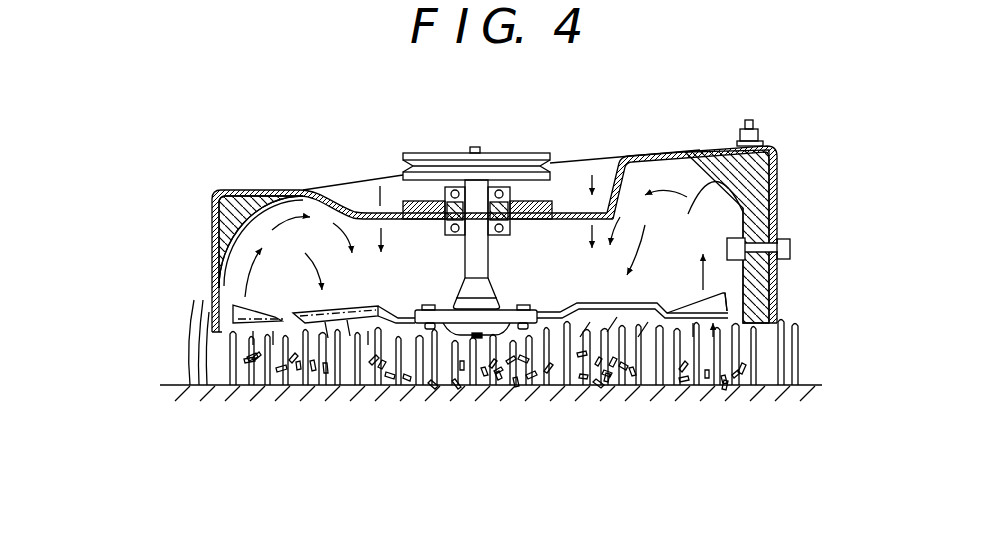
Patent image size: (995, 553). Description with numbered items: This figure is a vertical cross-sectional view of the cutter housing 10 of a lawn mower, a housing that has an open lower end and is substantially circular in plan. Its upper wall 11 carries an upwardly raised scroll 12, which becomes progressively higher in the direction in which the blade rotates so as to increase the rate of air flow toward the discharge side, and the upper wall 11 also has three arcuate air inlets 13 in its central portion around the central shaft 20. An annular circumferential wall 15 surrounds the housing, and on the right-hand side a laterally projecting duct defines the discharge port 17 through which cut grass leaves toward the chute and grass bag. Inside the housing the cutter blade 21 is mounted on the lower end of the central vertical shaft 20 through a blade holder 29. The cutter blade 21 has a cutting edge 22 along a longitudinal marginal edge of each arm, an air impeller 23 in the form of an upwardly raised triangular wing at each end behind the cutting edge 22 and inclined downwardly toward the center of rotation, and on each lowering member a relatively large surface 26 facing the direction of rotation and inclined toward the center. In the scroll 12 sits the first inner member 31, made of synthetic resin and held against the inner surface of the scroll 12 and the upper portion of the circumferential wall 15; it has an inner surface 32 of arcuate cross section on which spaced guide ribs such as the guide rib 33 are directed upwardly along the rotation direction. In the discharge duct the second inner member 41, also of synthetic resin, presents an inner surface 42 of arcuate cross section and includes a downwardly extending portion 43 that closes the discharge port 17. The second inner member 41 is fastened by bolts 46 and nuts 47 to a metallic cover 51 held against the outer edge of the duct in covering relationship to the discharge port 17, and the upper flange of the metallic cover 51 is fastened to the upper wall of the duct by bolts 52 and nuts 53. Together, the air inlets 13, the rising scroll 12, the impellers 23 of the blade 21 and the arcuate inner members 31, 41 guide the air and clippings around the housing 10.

The cutter housing 10 is at (205, 258).
The upper wall 11 is at (566, 212).
The scroll 12 is at (326, 188).
The air inlets 13 is at (390, 212).
The circumferential wall 15 is at (213, 225).
The discharge port 17 is at (777, 150).
The central shaft 20 is at (470, 250).
The cutter blade 21 is at (738, 301).
The cutting edge 22 is at (669, 304).
The air impeller 23 is at (262, 305).
The surface 26 is at (645, 312).
The blade holder 29 is at (483, 338).
The first inner member 31 is at (233, 192).
The inner surface 32 is at (270, 230).
The guide rib 33 is at (270, 194).
The second inner member 41 is at (712, 150).
The inner surface 42 is at (697, 195).
The downwardly extending portion 43 is at (777, 316).
The bolts 46 is at (790, 248).
The nuts 47 is at (746, 247).
The metallic cover 51 is at (777, 212).
The bolts 52 is at (750, 120).
The nuts 53 is at (763, 146).